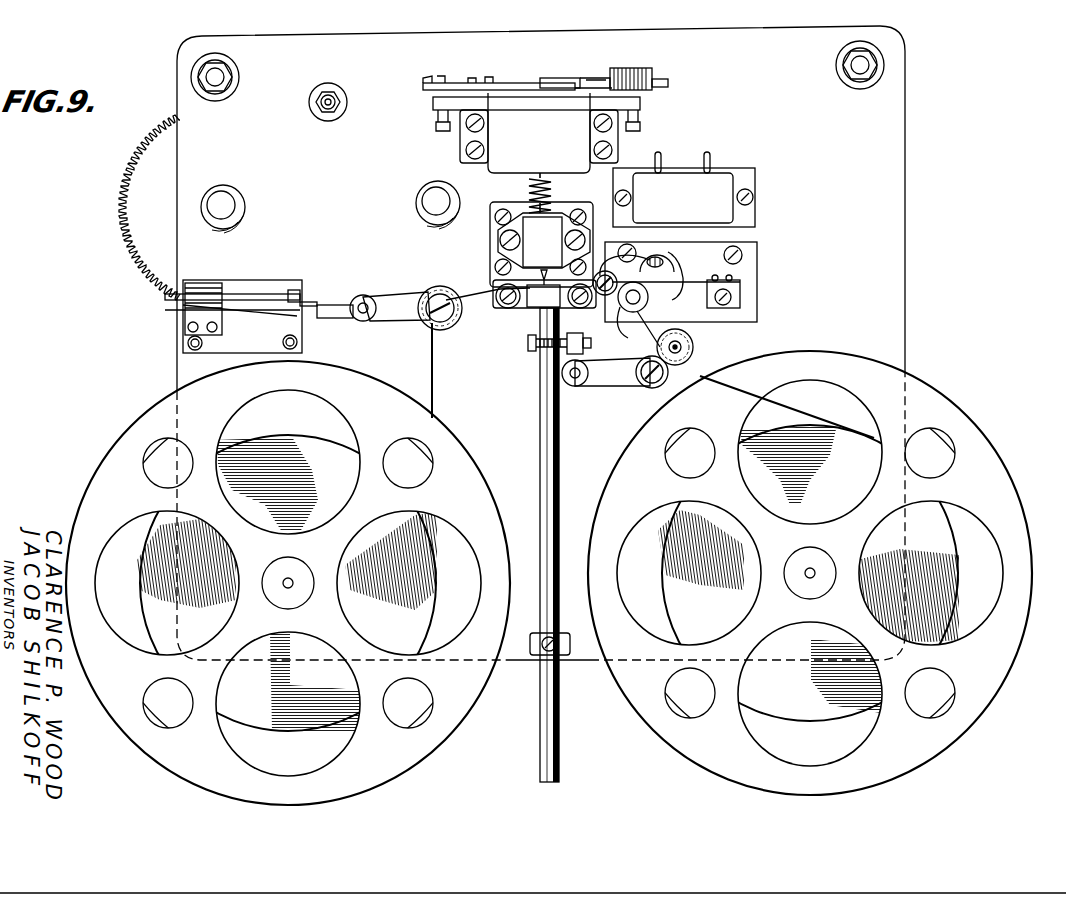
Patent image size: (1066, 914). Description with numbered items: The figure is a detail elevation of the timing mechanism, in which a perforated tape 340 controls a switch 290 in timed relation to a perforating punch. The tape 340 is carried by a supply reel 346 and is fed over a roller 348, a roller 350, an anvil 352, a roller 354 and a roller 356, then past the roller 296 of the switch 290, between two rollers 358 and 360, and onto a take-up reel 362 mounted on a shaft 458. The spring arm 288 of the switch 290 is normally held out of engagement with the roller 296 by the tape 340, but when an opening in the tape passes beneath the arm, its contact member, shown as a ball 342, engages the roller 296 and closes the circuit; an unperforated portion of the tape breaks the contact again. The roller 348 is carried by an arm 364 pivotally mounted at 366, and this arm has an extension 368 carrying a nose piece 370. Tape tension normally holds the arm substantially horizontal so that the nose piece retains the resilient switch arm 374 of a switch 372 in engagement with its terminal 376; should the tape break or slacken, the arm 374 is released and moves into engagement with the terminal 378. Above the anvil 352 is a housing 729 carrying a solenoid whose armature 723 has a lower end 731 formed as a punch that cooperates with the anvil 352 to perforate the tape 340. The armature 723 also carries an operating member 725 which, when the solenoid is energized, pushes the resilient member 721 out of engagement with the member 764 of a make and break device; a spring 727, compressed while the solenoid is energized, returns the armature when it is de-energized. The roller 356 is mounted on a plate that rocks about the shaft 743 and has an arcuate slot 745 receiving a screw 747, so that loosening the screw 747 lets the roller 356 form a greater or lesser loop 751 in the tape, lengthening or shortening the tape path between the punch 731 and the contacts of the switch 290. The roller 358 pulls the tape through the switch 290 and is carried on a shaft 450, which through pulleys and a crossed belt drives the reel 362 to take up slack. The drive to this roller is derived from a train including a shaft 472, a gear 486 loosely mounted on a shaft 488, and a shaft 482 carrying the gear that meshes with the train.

The shaft 482 is at (338, 97).
The shaft 488 is at (230, 200).
The shaft 472 is at (432, 196).
The gear 486 is at (137, 260).
The switch 372 is at (236, 281).
The resilient switch arm 374 is at (255, 296).
The terminal 376 is at (299, 291).
The terminal 378 is at (287, 314).
The nose piece 370 is at (314, 303).
The extension 368 is at (330, 318).
The pivot 366 is at (364, 303).
The arm 364 is at (392, 320).
The roller 348 is at (447, 330).
The tape 340 is at (433, 398).
The roller 350 is at (505, 309).
The reel 346 is at (134, 418).
The operating member 725 is at (548, 82).
The make and break device element 764 is at (602, 79).
The armature 723 is at (535, 90).
The make and break device member 721 is at (583, 90).
The housing 729 is at (539, 133).
The spring 727 is at (555, 198).
The punch 731 is at (482, 292).
The roller 354 is at (541, 244).
The anvil 352 is at (544, 294).
The loop 751 is at (600, 296).
The roller 356 is at (608, 275).
The arcuate slot 745 is at (656, 262).
The screw 747 is at (680, 262).
The spring arm 288 is at (712, 282).
The switch 290 is at (639, 257).
The ball 342 is at (651, 314).
The roller 296 is at (588, 340).
The shaft 743 is at (630, 348).
The shaft 450 is at (682, 344).
The roller 358 is at (691, 355).
The roller 360 is at (646, 386).
The reel 362 is at (928, 396).
The shaft 458 is at (813, 568).